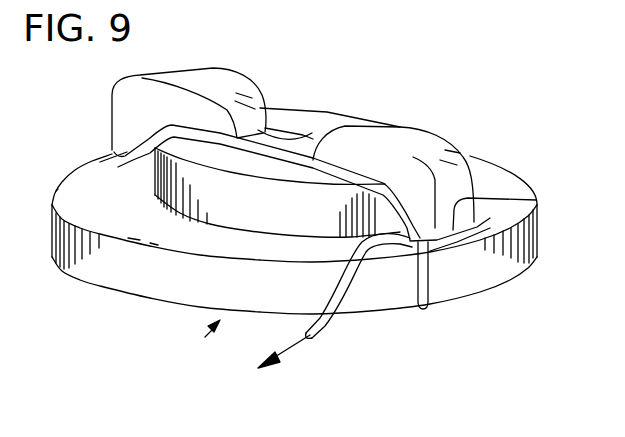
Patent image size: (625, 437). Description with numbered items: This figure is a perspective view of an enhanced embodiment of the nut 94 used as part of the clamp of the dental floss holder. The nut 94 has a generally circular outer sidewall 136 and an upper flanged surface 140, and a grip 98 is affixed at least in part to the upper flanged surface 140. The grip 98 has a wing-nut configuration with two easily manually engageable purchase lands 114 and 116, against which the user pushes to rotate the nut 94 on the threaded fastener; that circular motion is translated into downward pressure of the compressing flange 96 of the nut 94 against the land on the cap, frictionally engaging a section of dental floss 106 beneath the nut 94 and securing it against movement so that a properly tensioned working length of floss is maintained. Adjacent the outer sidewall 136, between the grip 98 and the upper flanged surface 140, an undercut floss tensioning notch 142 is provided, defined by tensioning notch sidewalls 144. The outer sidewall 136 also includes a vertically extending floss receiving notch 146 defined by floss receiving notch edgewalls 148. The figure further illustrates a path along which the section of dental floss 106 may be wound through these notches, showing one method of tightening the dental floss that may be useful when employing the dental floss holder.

The nut 94 is at (187, 241).
The compressing flange 96 is at (212, 327).
The grip 98 is at (207, 78).
The section of dental floss 106 is at (320, 110).
The purchase land 114 is at (410, 157).
The purchase land 116 is at (127, 108).
The outer sidewall 136 is at (72, 246).
The upper flanged surface 140 is at (115, 213).
The undercut floss tensioning notch 142 is at (534, 205).
The tensioning notch sidewall 144 is at (57, 191).
The floss receiving notch 146 is at (432, 258).
The floss receiving notch edgewall 148 is at (438, 268).